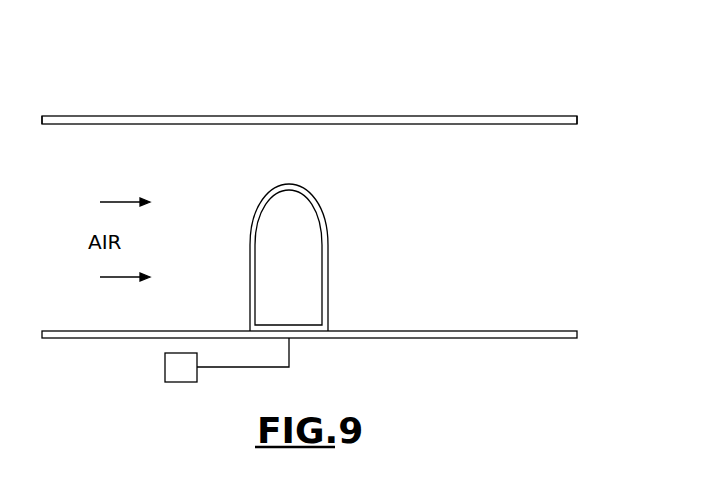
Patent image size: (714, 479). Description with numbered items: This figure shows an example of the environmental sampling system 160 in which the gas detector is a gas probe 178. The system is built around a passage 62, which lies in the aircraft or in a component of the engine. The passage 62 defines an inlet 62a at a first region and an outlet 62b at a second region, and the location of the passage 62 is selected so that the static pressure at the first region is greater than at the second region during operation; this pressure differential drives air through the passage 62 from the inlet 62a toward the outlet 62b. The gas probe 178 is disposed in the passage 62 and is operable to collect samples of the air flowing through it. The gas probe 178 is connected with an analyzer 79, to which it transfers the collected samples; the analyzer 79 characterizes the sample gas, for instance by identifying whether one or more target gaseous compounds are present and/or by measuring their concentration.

The environmental sampling system 160 is at (422, 102).
The passage 62 is at (255, 116).
The inlet 62a is at (53, 116).
The outlet 62b is at (568, 116).
The gas probe 178 is at (328, 240).
The analyzer 79 is at (165, 374).